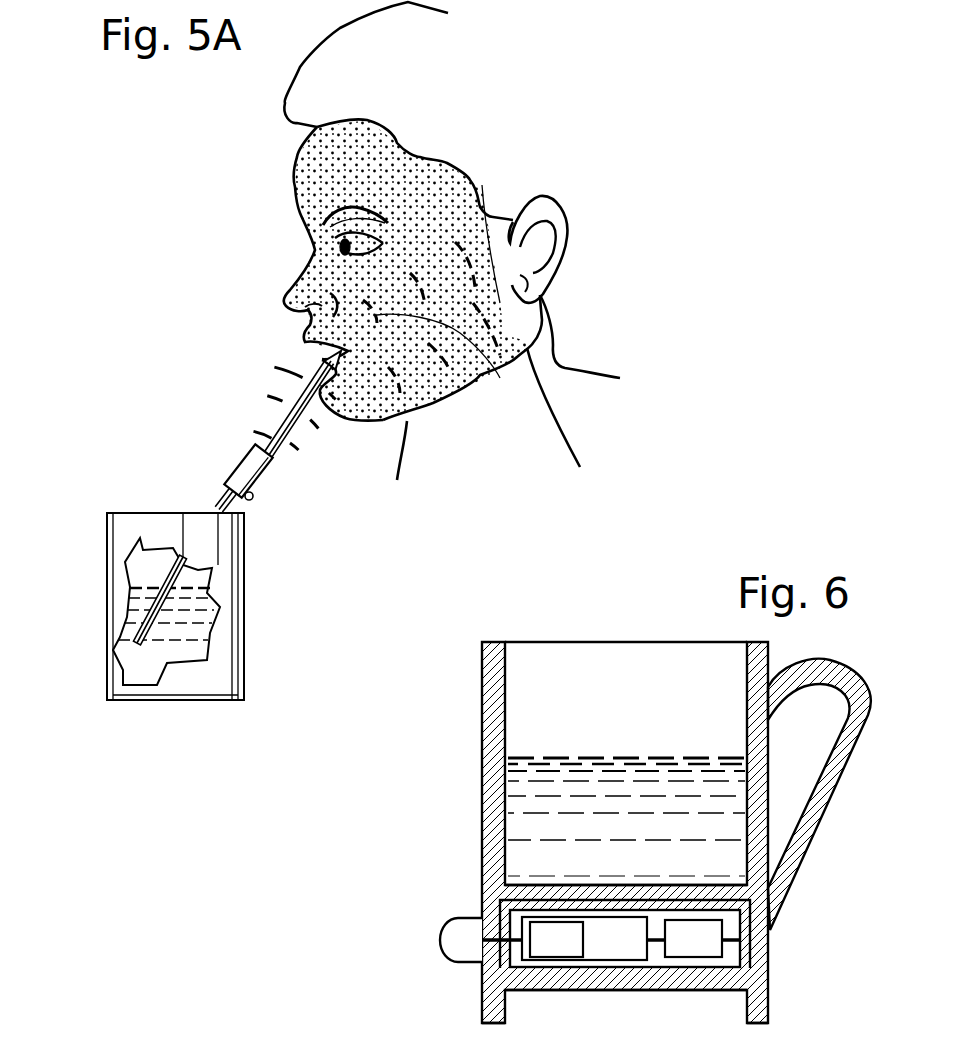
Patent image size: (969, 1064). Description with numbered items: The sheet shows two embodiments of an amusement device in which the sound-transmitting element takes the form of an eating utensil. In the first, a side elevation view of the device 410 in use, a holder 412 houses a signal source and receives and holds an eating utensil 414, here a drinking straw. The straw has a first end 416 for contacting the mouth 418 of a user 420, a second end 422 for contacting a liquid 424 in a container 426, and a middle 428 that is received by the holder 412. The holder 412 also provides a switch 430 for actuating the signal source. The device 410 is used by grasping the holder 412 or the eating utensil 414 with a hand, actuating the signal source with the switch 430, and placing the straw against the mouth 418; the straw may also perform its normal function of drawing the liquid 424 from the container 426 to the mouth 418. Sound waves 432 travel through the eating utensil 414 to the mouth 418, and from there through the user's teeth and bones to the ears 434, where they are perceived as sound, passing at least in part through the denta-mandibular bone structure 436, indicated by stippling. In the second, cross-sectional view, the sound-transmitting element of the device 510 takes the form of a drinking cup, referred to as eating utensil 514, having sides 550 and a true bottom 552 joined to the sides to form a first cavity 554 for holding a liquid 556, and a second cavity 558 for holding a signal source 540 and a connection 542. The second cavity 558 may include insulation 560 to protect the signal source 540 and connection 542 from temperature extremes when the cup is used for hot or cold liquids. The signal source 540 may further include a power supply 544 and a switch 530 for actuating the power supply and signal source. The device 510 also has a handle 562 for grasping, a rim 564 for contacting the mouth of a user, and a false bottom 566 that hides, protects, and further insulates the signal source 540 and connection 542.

In FIG. 5A, the device 410 is at (190, 440).
In FIG. 5A, the holder 412 is at (267, 470).
In FIG. 5A, the eating utensil 414 is at (238, 495).
In FIG. 5A, the first end 416 is at (322, 356).
In FIG. 5A, the mouth 418 is at (320, 372).
In FIG. 5A, the user 420 is at (252, 128).
In FIG. 5A, the second end 422 is at (133, 640).
In FIG. 5A, the liquid 424 is at (193, 637).
In FIG. 5A, the container 426 is at (247, 590).
In FIG. 5A, the middle 428 is at (215, 512).
In FIG. 5A, the switch 430 is at (255, 498).
In FIG. 5A, the sound waves 432 is at (443, 353).
In FIG. 5A, the ears 434 is at (555, 232).
In FIG. 5A, the denta-mandibular bone structure 436 is at (430, 203).
In FIG. 6, the device 510 is at (538, 591).
In FIG. 6, the eating utensil 514 is at (450, 832).
In FIG. 6, the switch 530 is at (457, 940).
In FIG. 6, the signal source 540 is at (637, 955).
In FIG. 6, the connection 542 is at (714, 955).
In FIG. 6, the power supply 544 is at (578, 955).
In FIG. 6, the sides 550 is at (492, 760).
In FIG. 6, the true bottom 552 is at (580, 893).
In FIG. 6, the first cavity 554 is at (603, 690).
In FIG. 6, the liquid 556 is at (566, 874).
In FIG. 6, the second cavity 558 is at (640, 1007).
In FIG. 6, the insulation 560 is at (663, 905).
In FIG. 6, the handle 562 is at (822, 810).
In FIG. 6, the rim 564 is at (492, 642).
In FIG. 6, the false bottom 566 is at (580, 977).